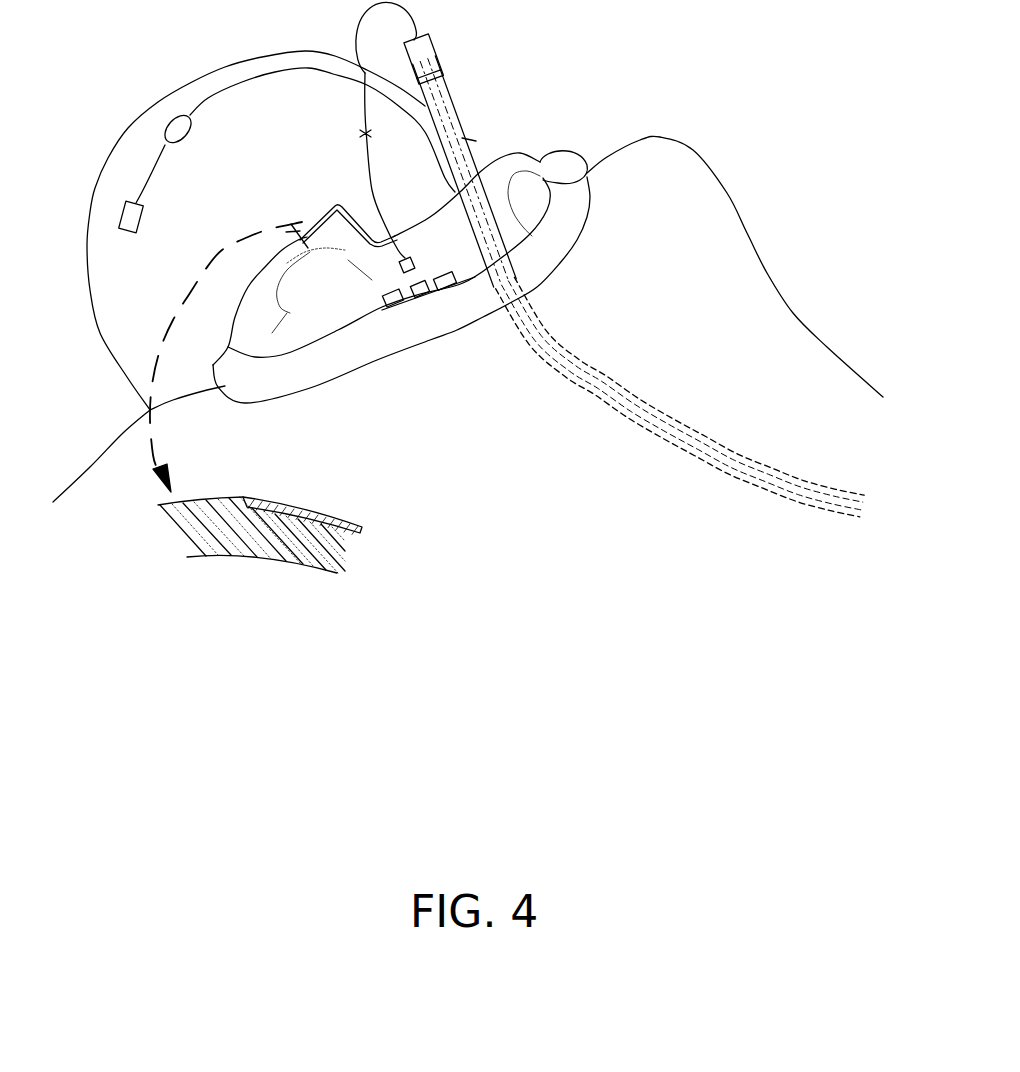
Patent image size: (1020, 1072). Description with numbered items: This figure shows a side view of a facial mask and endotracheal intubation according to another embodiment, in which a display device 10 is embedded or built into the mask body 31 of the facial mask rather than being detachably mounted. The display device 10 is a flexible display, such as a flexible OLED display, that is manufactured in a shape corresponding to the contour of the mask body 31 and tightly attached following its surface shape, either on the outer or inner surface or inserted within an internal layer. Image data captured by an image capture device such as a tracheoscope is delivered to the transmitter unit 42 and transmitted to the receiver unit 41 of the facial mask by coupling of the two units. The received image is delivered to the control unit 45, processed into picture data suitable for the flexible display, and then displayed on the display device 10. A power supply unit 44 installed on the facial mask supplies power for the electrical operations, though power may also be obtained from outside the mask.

The display device 10 is at (327, 230).
The mask body 31 is at (347, 557).
The receiver unit 41 is at (424, 300).
The transmitter unit 42 is at (408, 260).
The power supply unit 44 is at (447, 293).
The control unit 45 is at (390, 308).